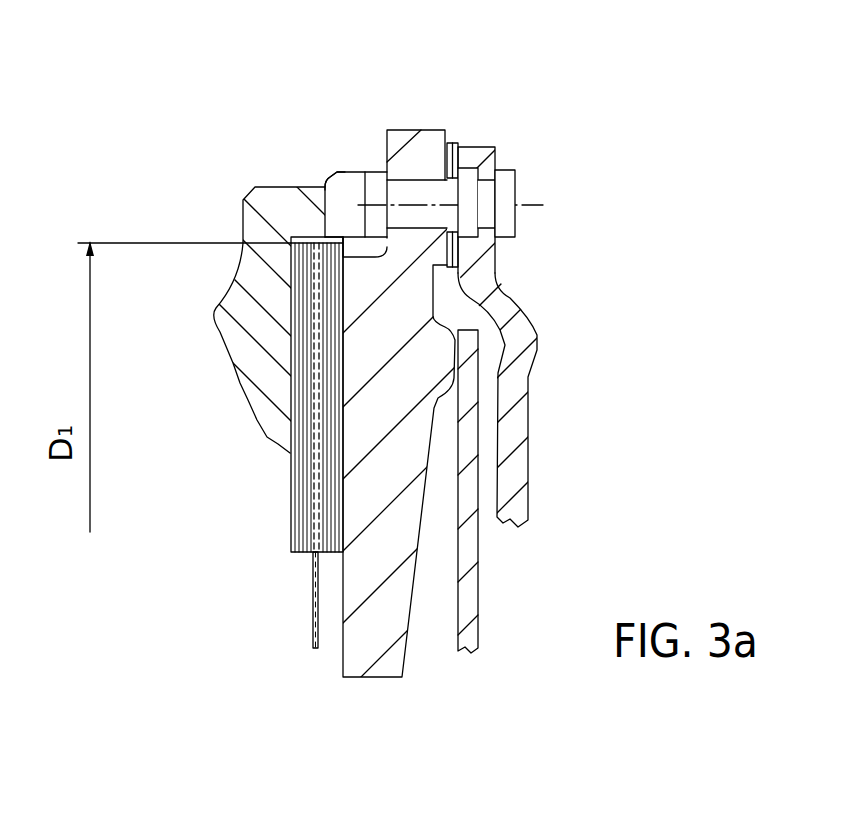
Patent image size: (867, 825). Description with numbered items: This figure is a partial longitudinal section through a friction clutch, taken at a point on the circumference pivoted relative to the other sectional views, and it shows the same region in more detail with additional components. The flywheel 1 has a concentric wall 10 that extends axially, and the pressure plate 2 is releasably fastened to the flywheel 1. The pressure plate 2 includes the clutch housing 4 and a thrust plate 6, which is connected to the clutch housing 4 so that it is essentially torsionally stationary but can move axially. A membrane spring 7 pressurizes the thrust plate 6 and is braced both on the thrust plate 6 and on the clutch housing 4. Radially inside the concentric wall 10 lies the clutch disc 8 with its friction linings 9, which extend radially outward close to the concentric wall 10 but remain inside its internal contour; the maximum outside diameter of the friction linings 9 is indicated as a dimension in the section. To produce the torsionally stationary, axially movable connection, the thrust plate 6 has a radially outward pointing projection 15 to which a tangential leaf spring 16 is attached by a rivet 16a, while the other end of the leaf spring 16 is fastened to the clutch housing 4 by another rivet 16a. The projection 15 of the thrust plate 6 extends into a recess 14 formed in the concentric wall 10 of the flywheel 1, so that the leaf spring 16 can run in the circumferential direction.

The flywheel 1 is at (222, 311).
The pressure plate 2 is at (592, 204).
The clutch housing 4 is at (532, 353).
The thrust plate 6 is at (410, 458).
The membrane spring 7 is at (470, 540).
The clutch disc 8 is at (313, 572).
The friction linings 9 is at (327, 368).
The concentric wall 10 is at (352, 150).
The recess 14 is at (303, 172).
The projection 15 is at (425, 145).
The tangential leaf spring 16 is at (462, 147).
The rivet 16a is at (528, 196).